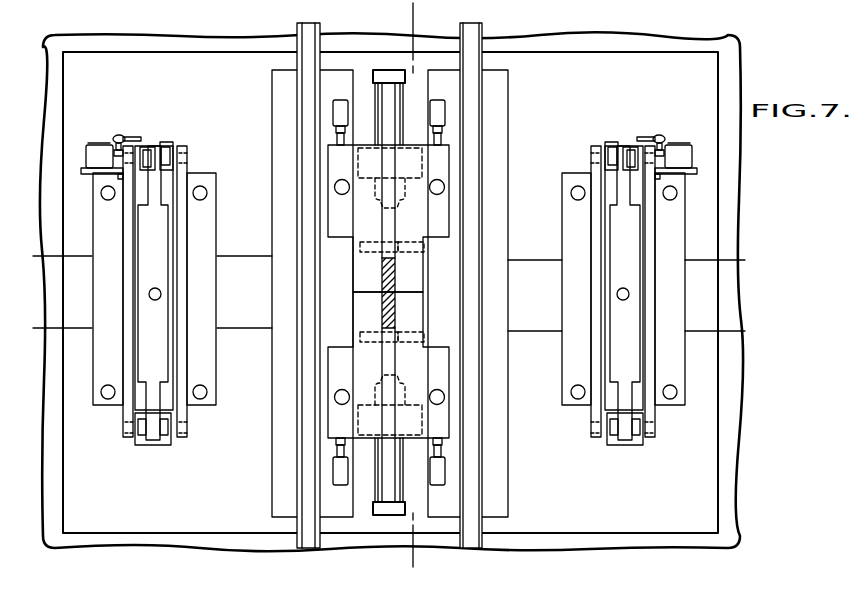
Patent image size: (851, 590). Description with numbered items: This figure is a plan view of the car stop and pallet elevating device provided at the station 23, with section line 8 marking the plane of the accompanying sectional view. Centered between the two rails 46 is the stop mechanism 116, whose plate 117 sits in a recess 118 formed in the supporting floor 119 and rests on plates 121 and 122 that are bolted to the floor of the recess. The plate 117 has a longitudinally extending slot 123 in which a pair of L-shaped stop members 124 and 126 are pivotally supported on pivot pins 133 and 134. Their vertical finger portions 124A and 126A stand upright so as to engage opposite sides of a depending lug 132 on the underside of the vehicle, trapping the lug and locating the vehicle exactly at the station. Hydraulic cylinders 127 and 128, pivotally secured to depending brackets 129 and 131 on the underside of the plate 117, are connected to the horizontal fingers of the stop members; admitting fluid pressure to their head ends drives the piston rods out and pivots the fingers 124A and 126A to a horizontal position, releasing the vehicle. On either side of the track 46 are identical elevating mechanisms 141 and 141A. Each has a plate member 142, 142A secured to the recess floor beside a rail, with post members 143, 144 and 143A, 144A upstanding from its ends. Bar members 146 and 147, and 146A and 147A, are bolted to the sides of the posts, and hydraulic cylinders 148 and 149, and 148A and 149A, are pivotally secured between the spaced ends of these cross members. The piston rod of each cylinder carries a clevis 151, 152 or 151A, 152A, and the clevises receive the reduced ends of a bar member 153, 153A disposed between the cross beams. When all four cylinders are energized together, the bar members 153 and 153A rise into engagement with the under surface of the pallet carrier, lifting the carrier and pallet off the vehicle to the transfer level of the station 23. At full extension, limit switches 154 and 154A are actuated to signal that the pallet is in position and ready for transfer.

The section line 8- 8 is at (420, 15).
The station 23 is at (758, 297).
The rails 46 is at (308, 385).
The stop mechanism 116 is at (395, 287).
The plate 117 is at (385, 292).
The recess 118 is at (719, 70).
The supporting floor 119 is at (737, 200).
The plate 121 is at (287, 95).
The plate 122 is at (493, 93).
The longitudinally extending slot 123 is at (392, 287).
The stop member 124 is at (422, 360).
The vertical finger portion 124A is at (387, 337).
The stop member 126 is at (420, 221).
The vertical finger portion 126A is at (387, 243).
The hydraulic cylinder 127 is at (370, 495).
The hydraulic cylinder 128 is at (365, 98).
The depending bracket 129 is at (366, 400).
The depending bracket 131 is at (370, 184).
The depending lug 132 is at (383, 297).
The pivot pin 133 is at (435, 336).
The pivot pin 134 is at (428, 250).
The elevating mechanism 141 is at (678, 132).
The elevating mechanism 141A is at (105, 92).
The plate member 142 is at (675, 403).
The plate member 142A is at (207, 407).
The post member 143 is at (613, 405).
The post member 143A is at (143, 400).
The post member 144 is at (610, 190).
The post member 144A is at (167, 183).
The bar member 146 is at (595, 393).
The bar member 146A is at (132, 318).
The bar member 147 is at (650, 343).
The bar member 147A is at (180, 225).
The hydraulic cylinder 148 is at (637, 443).
The hydraulic cylinder 148A is at (167, 440).
The hydraulic cylinder 149 is at (610, 157).
The hydraulic cylinder 149A is at (167, 143).
The clevis 151 is at (632, 433).
The clevis 151A is at (142, 433).
The clevis 152 is at (618, 163).
The clevis 152A is at (147, 160).
The bar member 153 is at (625, 253).
The bar member 153A is at (155, 252).
The limit switch 154 is at (667, 157).
The limit switch 154A is at (117, 155).